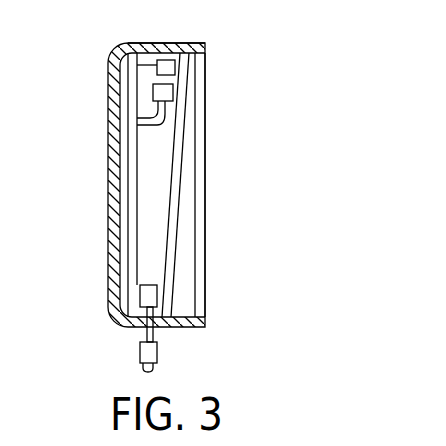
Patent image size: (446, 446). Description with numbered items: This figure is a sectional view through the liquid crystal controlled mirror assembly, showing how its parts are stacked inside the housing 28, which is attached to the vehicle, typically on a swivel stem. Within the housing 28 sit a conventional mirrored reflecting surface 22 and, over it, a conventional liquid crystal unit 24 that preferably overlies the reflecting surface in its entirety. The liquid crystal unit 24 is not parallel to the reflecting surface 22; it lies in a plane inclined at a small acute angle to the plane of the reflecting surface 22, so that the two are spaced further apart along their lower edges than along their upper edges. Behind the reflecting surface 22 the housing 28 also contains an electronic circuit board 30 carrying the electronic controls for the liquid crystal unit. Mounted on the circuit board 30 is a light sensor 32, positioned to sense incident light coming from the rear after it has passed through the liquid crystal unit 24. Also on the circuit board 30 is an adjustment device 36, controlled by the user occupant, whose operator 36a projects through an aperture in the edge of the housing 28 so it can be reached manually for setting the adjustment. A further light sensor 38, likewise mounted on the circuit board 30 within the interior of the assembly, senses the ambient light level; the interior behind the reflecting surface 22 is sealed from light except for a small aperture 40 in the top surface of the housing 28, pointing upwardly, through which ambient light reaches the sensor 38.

The mirrored reflecting surface 22 is at (180, 145).
The liquid crystal unit 24 is at (203, 197).
The housing 28 is at (112, 175).
The electronic circuit board 30 is at (133, 253).
The light sensor 32 is at (175, 68).
The adjustment device 36 is at (158, 293).
The operator 36a is at (157, 365).
The further light sensor 38 is at (173, 93).
The aperture 40 is at (163, 47).